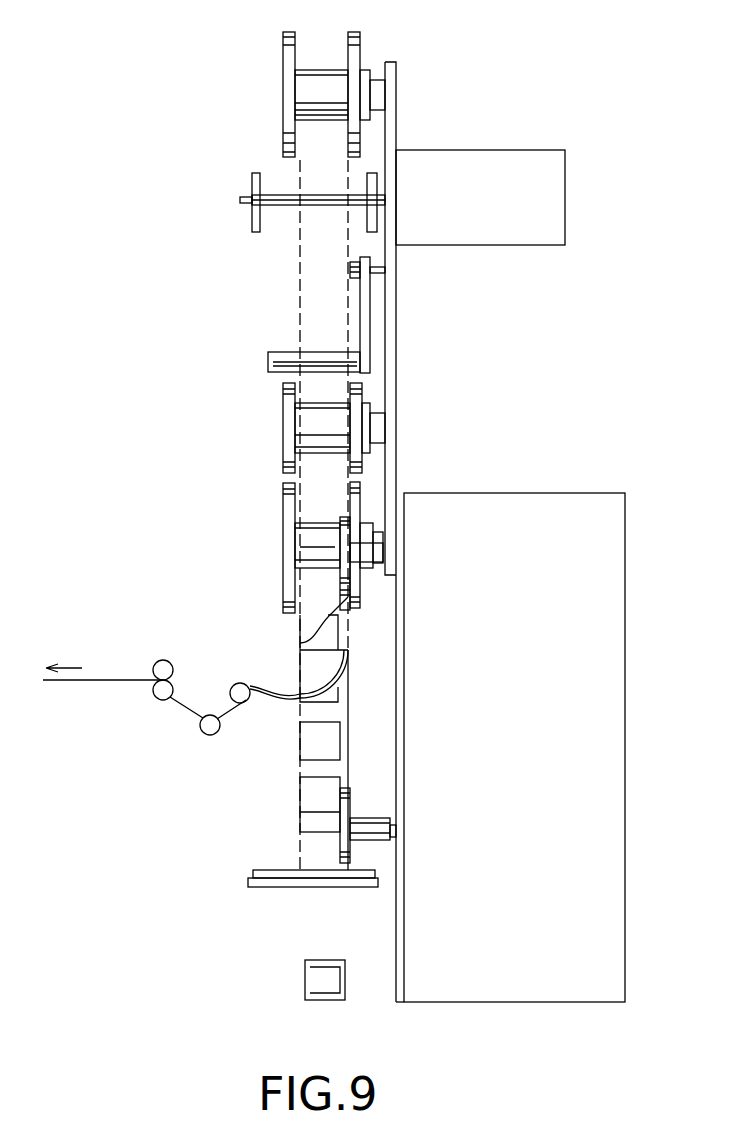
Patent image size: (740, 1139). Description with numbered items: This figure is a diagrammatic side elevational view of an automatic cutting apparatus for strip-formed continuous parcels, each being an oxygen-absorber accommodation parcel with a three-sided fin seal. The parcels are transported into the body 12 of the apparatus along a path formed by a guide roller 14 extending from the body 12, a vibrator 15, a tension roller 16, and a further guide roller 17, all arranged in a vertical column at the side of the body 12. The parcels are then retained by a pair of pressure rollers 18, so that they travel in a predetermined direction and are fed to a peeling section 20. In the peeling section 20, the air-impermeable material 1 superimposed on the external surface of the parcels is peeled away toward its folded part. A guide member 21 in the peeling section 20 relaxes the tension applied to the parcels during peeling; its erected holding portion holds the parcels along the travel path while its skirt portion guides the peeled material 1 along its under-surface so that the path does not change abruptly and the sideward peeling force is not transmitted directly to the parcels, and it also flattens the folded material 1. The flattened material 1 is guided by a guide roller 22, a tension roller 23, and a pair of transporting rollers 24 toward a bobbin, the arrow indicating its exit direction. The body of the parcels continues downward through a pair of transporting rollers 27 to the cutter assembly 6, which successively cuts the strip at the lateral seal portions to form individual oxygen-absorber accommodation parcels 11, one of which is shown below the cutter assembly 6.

The air-impermeable material 1 is at (123, 680).
The cutter assembly 6 is at (275, 887).
The oxygen-absorber accommodation parcel 11 is at (320, 980).
The body 12 is at (615, 658).
The guide roller 14 is at (285, 45).
The vibrator 15 is at (253, 178).
The tension roller 16 is at (283, 357).
The guide roller 17 is at (288, 412).
The pressure rollers 18 is at (350, 577).
The peeling section 20 is at (278, 727).
The guide member 21 is at (285, 700).
The guide roller 22 is at (240, 686).
The tension roller 23 is at (209, 727).
The transporting rollers 24 is at (163, 667).
The transporting rollers 27 is at (345, 804).